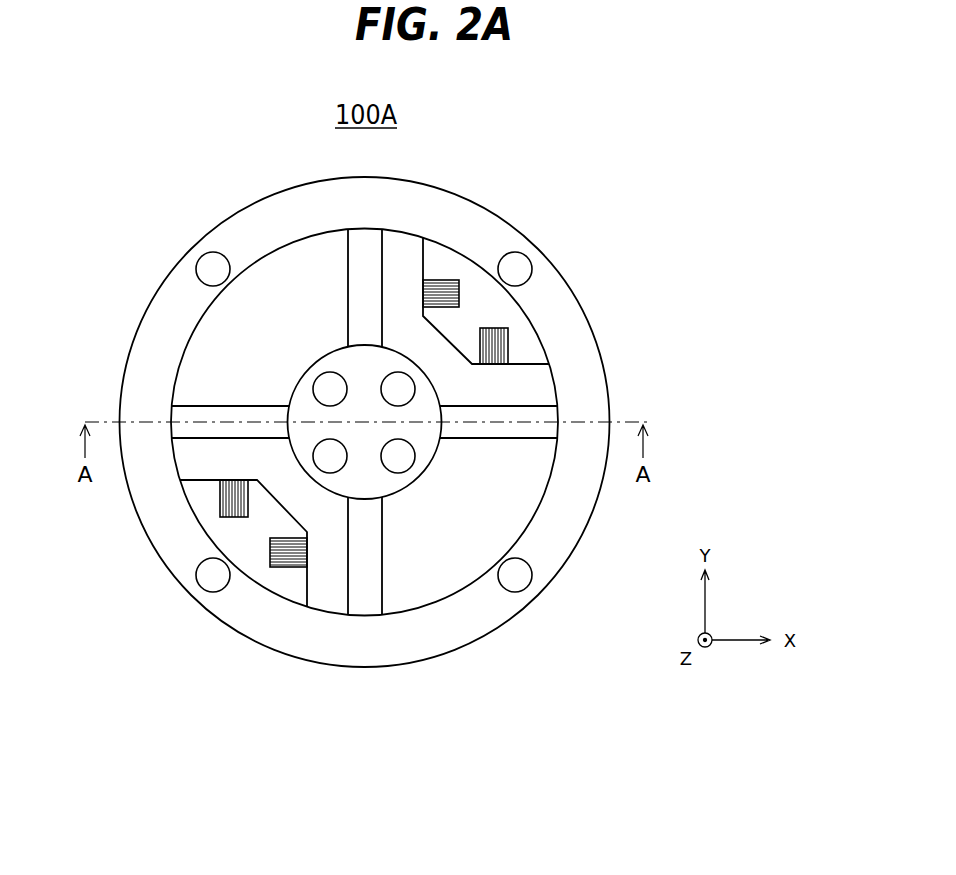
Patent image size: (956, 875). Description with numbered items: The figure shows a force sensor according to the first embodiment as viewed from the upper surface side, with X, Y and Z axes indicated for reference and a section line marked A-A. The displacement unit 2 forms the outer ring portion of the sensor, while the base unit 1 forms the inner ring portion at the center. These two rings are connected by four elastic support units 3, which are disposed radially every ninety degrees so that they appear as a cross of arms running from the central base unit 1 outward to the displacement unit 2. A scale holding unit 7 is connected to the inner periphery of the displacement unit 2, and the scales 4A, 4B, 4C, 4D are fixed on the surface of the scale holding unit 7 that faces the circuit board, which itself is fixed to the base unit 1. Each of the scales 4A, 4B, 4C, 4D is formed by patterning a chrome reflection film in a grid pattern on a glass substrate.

The base unit 1 is at (423, 480).
The displacement unit 2 is at (520, 232).
The elastic support unit 3 is at (347, 293).
The scale holding unit 7 is at (527, 348).
The scale 4A is at (493, 327).
The scale 4B is at (220, 498).
The scale 4C is at (440, 279).
The scale 4D is at (287, 568).